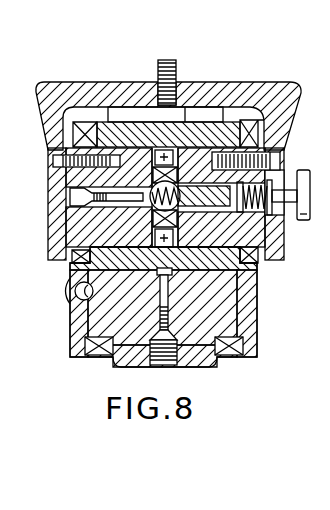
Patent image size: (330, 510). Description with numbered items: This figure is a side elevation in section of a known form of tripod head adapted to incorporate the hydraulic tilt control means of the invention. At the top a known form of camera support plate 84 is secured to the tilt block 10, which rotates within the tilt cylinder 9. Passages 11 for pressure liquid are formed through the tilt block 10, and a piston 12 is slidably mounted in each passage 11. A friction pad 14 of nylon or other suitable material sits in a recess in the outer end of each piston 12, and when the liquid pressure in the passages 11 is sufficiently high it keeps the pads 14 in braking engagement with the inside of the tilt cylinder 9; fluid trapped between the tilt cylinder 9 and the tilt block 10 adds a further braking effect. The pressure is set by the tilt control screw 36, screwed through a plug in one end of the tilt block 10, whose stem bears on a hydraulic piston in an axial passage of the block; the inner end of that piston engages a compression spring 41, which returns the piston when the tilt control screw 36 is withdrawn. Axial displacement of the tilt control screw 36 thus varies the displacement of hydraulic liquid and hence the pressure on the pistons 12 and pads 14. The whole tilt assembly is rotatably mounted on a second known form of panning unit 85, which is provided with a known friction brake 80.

The tilt cylinder 9 is at (97, 133).
The tilt block 10 is at (258, 246).
The passage 11 is at (115, 232).
The piston 12 is at (52, 181).
The friction pad 14 is at (193, 150).
The tilt control screw 36 is at (301, 172).
The compression spring 41 is at (115, 212).
The friction brake 80 is at (77, 293).
The camera support plate 84 is at (273, 92).
The panning unit 85 is at (255, 331).